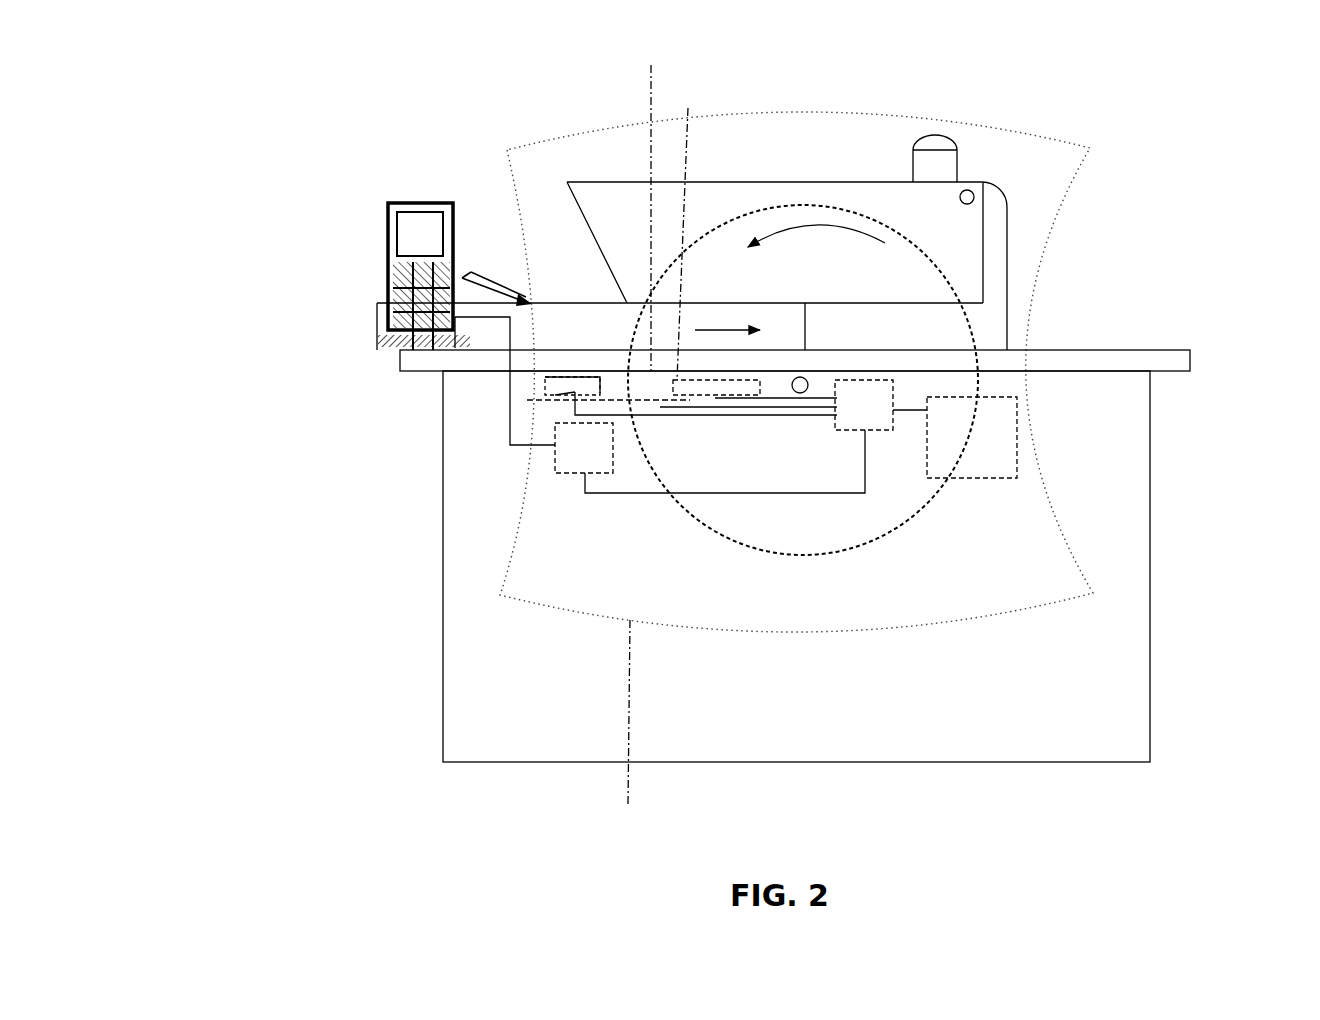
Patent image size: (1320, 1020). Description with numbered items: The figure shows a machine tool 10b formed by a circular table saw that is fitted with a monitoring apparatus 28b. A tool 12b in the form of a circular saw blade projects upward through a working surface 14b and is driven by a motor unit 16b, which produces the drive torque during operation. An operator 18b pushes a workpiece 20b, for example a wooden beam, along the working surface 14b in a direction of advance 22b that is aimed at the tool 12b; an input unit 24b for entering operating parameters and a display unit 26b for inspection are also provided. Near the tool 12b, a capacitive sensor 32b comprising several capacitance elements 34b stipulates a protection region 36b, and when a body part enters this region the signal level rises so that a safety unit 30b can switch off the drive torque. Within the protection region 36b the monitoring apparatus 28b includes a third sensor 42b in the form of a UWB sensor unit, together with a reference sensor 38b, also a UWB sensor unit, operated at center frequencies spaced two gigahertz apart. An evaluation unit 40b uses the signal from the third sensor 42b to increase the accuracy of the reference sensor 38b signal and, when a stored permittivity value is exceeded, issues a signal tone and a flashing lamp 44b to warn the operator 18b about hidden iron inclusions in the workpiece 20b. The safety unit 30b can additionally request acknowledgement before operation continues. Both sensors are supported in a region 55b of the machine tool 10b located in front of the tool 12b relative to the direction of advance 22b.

The machine tool 10b is at (1188, 228).
The tool 12b is at (930, 272).
The working surface 14b is at (1165, 348).
The motor unit 16b is at (1022, 465).
The operator 18b is at (470, 274).
The workpiece 20b is at (378, 338).
The direction of advance 22b is at (727, 330).
The input unit 24b is at (372, 272).
The display unit 26b is at (400, 205).
The monitoring apparatus 28b is at (552, 416).
The safety unit 30b is at (908, 385).
The capacitive sensor 32b is at (667, 360).
The capacitance element 34b is at (560, 378).
The protection region 36b is at (626, 732).
The reference sensor 38b is at (527, 400).
The evaluation unit 40b is at (557, 450).
The third sensor 42b is at (574, 205).
The flashing lamp 44b is at (950, 152).
The region 55b is at (622, 450).